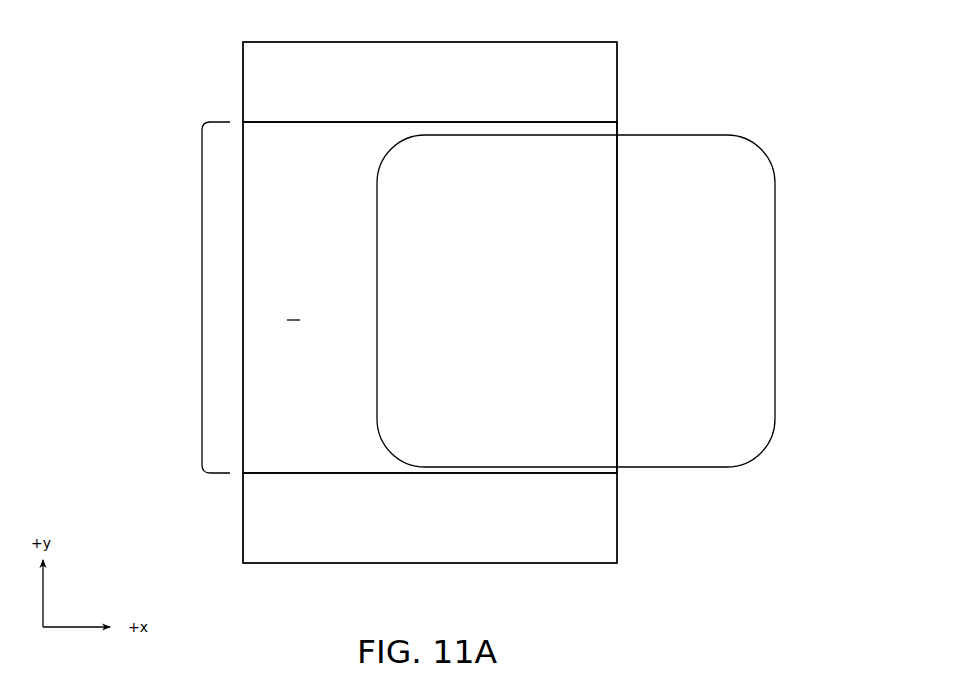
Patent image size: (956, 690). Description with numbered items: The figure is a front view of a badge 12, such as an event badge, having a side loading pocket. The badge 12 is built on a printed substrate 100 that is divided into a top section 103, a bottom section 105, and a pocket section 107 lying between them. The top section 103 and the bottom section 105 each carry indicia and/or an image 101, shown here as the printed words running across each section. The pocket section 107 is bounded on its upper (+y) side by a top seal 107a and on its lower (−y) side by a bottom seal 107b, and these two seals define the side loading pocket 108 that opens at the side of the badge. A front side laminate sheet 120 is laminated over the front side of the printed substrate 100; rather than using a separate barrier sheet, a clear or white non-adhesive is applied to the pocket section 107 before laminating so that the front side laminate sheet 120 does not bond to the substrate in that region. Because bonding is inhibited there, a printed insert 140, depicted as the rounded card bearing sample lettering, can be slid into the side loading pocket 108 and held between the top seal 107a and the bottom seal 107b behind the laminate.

The badge 12 is at (762, 42).
The printed substrate 100 is at (589, 40).
The indicia and/or image 101 is at (378, 57).
The top section 103 is at (258, 63).
The bottom section 105 is at (257, 498).
The pocket section 107 is at (202, 305).
The top seal 107a is at (358, 123).
The bottom seal 107b is at (352, 472).
The side loading pocket 108 is at (631, 478).
The front side laminate sheet 120 is at (605, 95).
The printed insert 140 is at (774, 176).